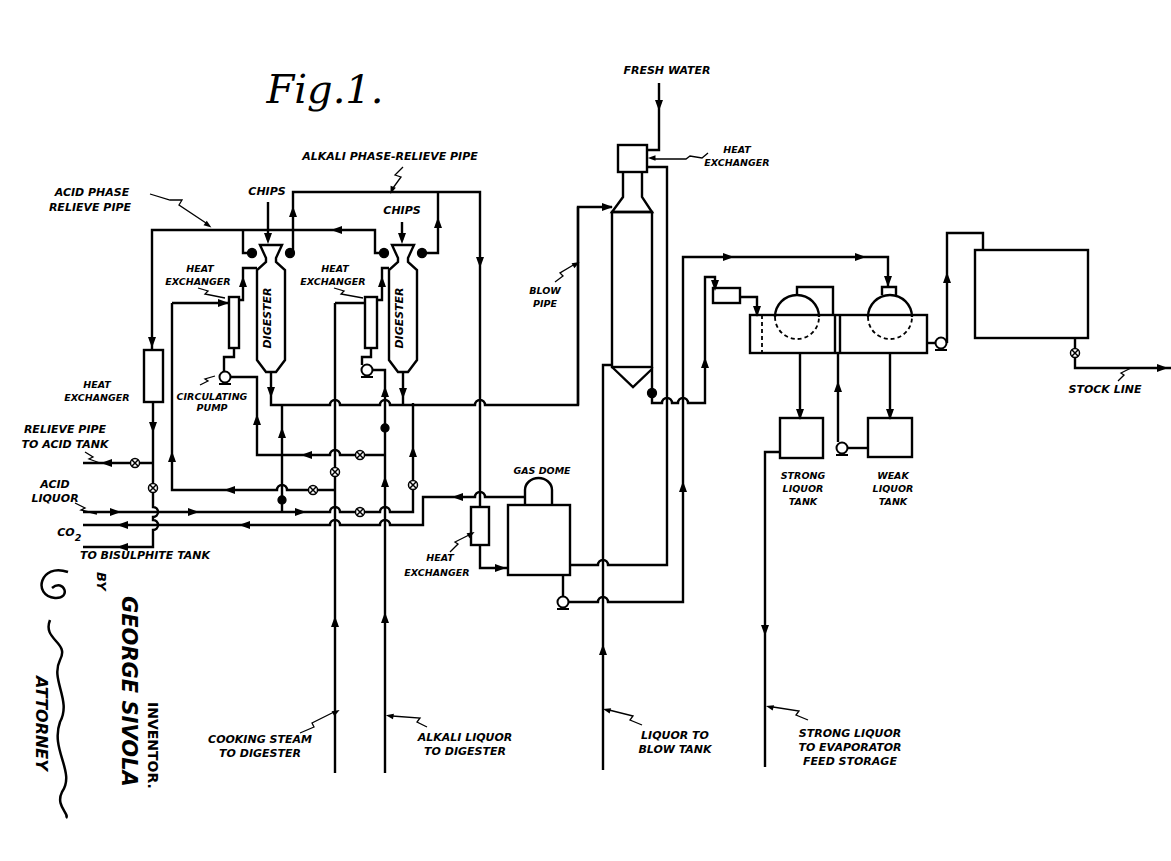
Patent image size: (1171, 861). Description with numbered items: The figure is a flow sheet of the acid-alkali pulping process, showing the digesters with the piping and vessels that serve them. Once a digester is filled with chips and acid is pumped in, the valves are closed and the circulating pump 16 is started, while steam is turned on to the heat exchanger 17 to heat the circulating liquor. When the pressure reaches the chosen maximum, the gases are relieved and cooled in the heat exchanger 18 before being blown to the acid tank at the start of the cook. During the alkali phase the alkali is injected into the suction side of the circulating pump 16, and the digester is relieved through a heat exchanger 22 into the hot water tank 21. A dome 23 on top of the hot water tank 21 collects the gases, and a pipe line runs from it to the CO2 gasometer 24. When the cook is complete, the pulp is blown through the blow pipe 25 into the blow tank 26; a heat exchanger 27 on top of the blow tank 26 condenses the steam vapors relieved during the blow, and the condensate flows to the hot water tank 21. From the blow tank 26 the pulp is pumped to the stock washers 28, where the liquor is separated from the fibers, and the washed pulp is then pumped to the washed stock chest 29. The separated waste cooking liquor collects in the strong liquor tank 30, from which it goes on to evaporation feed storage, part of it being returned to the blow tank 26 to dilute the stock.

The circulating pump 16 is at (221, 377).
The heat exchanger 17 is at (228, 325).
The heat exchanger 18 is at (144, 353).
The hot water tank 21 is at (571, 549).
The heat exchanger 22 is at (470, 516).
The dome 23 is at (555, 491).
The CO2 gasometer 24 is at (331, 528).
The blow pipe 25 is at (577, 228).
The blow tank 26 is at (612, 277).
The heat exchanger 27 is at (617, 161).
The stock washers 28 is at (779, 297).
The washed stock chest 29 is at (1090, 306).
The strong liquor tank 30 is at (778, 440).